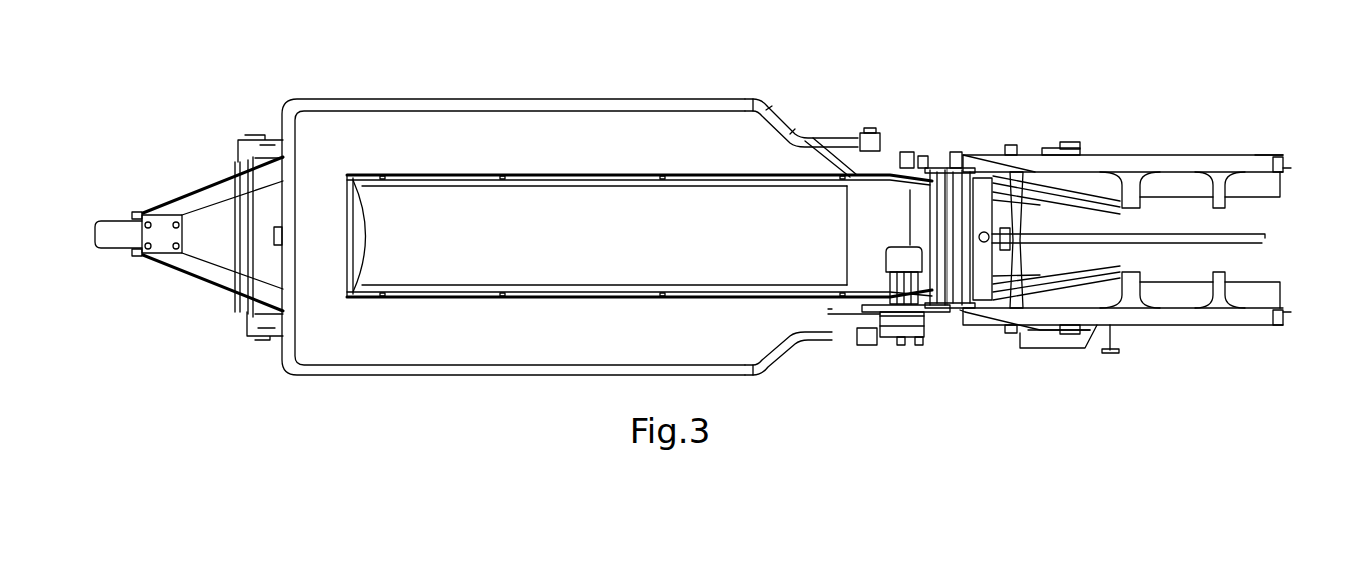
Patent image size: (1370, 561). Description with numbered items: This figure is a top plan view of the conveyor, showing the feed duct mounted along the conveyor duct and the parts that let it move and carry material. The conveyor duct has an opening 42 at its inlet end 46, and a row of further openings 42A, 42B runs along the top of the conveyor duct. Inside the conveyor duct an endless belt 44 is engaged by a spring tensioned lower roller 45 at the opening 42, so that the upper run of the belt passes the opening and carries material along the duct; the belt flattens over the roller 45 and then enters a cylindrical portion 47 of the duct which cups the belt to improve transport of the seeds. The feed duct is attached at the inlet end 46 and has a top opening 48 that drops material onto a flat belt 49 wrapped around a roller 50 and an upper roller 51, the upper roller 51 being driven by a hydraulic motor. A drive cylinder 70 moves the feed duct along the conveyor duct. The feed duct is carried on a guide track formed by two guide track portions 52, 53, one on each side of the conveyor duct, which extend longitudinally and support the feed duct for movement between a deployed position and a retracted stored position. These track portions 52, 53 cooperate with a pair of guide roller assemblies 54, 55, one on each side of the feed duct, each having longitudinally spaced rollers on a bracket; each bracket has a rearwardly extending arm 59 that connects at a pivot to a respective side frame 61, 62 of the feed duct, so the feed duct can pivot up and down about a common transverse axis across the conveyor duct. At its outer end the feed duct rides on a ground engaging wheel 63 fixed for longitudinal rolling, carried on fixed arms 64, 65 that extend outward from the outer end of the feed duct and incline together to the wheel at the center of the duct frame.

The opening 42 is at (1050, 210).
The opening 42A is at (1175, 208).
The opening 42B is at (1265, 155).
The endless belt 44 is at (1097, 280).
The lower roller 45 is at (975, 355).
The inlet end 46 is at (942, 387).
The cylindrical portion 47 is at (1247, 155).
The top opening 48 is at (480, 272).
The flat belt 49 is at (557, 273).
The roller 50 is at (243, 150).
The upper roller 51 is at (945, 150).
The guide track portion 52 is at (1220, 322).
The guide track portion 53 is at (1264, 155).
The guide roller assembly 54 is at (1023, 338).
The guide roller assembly 55 is at (1060, 140).
The arm 59 is at (926, 157).
The side frame 61 is at (686, 292).
The side frame 62 is at (650, 175).
The ground engaging wheel 63 is at (114, 228).
The fixed arm 64 is at (202, 182).
The fixed arm 65 is at (214, 278).
The drive cylinder 70 is at (1250, 233).